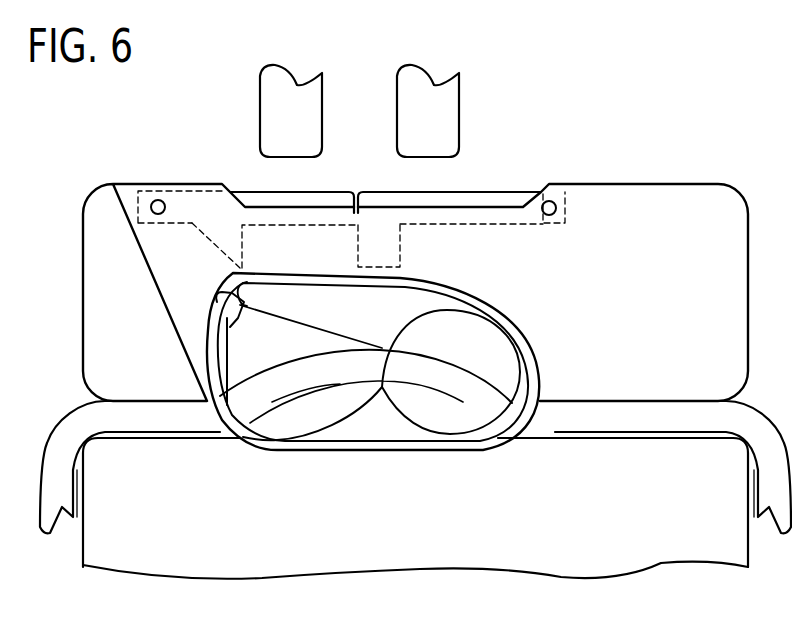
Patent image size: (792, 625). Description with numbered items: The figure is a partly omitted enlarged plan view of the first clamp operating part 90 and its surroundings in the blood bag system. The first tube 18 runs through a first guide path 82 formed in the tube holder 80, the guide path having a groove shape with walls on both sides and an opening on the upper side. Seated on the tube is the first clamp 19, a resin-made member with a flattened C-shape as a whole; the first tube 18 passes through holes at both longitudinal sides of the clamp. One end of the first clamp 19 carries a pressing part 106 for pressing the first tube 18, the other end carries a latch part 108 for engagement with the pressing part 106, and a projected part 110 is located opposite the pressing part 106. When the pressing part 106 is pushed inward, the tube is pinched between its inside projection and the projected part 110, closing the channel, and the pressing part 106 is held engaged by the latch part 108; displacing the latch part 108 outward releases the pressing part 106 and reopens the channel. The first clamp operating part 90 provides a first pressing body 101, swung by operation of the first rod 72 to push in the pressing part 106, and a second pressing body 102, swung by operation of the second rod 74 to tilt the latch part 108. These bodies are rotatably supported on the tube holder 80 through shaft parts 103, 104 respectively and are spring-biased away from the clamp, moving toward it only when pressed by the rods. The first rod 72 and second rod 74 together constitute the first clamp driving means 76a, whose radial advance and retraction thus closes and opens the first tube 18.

The tube holder 80 is at (56, 191).
The first clamp operating part 90 is at (496, 167).
The second rod 74 is at (272, 103).
The first rod 72 is at (440, 108).
The first clamp driving means 76a is at (506, 59).
The shaft part 104 is at (157, 200).
The shaft part 103 is at (557, 208).
The second pressing body 102 is at (247, 202).
The first pressing body 101 is at (478, 200).
The pressing part 106 is at (323, 303).
The first clamp 19 is at (520, 310).
The latch part 108 is at (225, 303).
The projected part 110 is at (382, 417).
The first tube 18 is at (58, 447).
The first guide path 82 is at (617, 402).